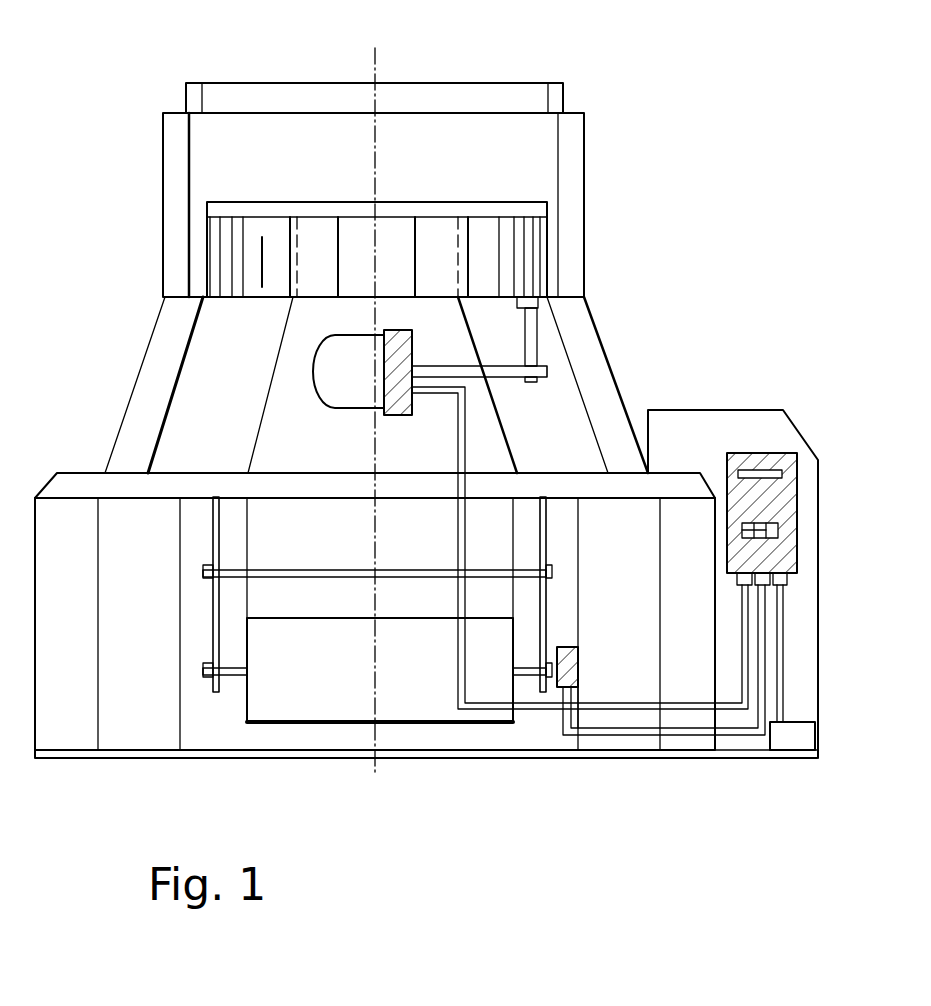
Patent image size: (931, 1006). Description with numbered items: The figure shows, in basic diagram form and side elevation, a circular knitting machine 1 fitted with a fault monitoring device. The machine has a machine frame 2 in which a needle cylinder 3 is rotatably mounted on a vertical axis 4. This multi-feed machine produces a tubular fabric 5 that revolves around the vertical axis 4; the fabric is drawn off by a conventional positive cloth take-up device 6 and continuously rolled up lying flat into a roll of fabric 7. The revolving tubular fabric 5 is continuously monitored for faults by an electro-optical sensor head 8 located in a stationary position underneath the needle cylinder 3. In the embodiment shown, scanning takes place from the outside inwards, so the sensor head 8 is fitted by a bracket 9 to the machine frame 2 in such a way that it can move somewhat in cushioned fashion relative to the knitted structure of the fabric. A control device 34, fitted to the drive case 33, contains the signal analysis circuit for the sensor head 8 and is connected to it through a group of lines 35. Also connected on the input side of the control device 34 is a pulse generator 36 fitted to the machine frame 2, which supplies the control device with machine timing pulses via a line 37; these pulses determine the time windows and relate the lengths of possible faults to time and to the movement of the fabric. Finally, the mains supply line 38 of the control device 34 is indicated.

The circular knitting machine 1 is at (608, 262).
The machine frame 2 is at (598, 368).
The needle cylinder 3 is at (461, 230).
The vertical axis 4 is at (379, 66).
The tubular fabric 5 is at (493, 450).
The positive cloth take-up device 6 is at (230, 617).
The roll of fabric 7 is at (295, 703).
The electro-optical sensor head 8 is at (398, 392).
The bracket 9 is at (500, 367).
The drive case 33 is at (741, 422).
The control device 34 is at (787, 457).
The group of lines 35 is at (462, 553).
The pulse generator 36 is at (553, 690).
The line 37 is at (687, 735).
The mains supply line 38 is at (782, 645).